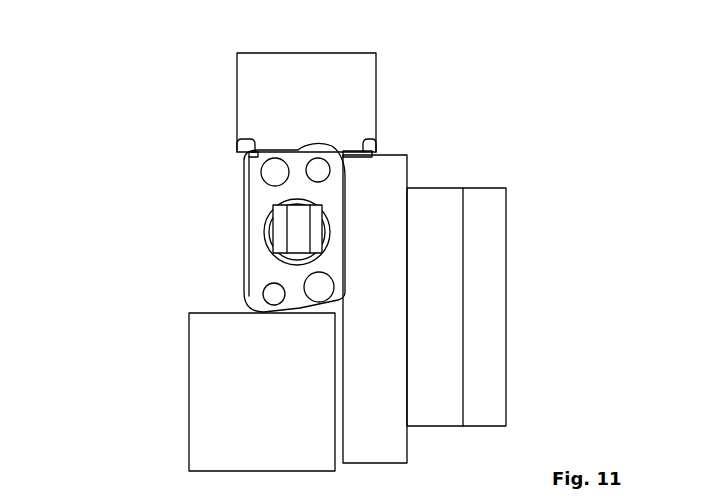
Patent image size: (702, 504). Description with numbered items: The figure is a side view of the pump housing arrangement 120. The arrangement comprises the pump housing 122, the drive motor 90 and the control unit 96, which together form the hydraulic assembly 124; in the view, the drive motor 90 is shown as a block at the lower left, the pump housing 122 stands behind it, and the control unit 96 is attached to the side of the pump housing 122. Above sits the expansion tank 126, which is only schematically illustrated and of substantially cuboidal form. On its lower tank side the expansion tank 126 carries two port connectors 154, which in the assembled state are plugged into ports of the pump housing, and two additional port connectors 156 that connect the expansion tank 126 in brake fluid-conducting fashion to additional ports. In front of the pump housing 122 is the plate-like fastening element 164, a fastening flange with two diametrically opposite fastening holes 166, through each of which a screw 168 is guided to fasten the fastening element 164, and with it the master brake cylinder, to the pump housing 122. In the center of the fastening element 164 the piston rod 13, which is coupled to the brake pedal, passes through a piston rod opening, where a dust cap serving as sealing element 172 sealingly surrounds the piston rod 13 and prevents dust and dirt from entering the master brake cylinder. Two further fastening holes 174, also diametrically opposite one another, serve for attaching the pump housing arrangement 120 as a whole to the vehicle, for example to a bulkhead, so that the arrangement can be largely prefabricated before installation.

The pump housing arrangement 120 is at (110, 124).
The expansion tank 126 is at (365, 70).
The port connectors 154 is at (237, 144).
The additional port connectors 156 is at (376, 145).
The screw 168 is at (268, 173).
The fastening holes 166 is at (257, 186).
The sealing element 172 is at (284, 224).
The piston rod 13 is at (293, 246).
The further fastening holes 174 is at (322, 172).
The fastening element 164 is at (332, 259).
The hydraulic assembly 124 is at (150, 356).
The drive motor 90 is at (200, 413).
The control unit 96 is at (490, 353).
The pump housing 122 is at (398, 446).